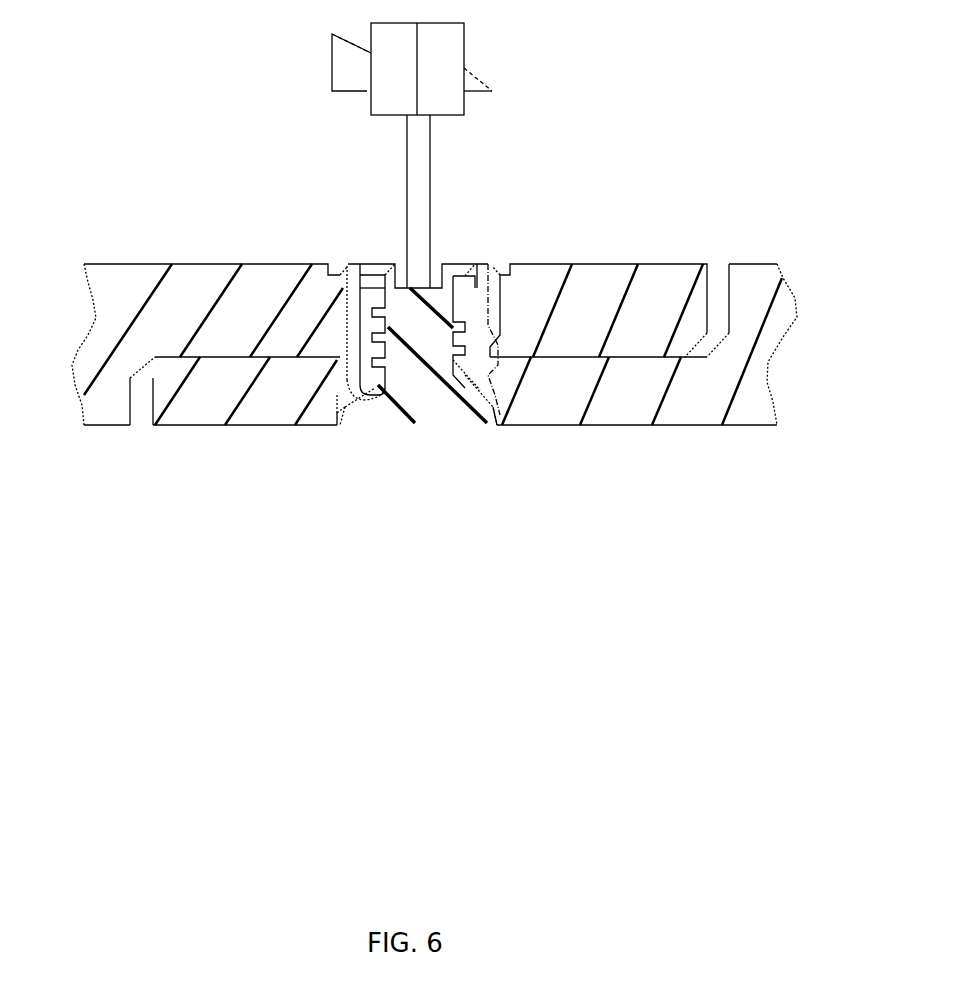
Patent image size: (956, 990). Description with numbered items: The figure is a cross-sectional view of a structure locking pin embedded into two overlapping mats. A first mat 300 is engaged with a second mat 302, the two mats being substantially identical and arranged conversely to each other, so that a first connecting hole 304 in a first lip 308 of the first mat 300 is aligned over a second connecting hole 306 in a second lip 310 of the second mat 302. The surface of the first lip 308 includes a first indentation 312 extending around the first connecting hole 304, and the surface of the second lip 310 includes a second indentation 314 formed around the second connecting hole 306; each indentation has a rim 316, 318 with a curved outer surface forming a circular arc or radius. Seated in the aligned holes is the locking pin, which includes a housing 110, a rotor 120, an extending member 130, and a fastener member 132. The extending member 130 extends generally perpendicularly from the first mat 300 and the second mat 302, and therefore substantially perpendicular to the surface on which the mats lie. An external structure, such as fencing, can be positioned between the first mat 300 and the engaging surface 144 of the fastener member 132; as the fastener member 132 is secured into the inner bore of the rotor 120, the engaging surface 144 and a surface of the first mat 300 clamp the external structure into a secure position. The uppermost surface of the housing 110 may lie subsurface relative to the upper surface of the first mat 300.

The housing 110 is at (358, 363).
The rotor 120 is at (409, 385).
The extending member 130 is at (422, 163).
The fastener member 132 is at (470, 77).
The engaging surface 144 is at (353, 90).
The first mat 300 is at (120, 265).
The second mat 302 is at (662, 425).
The first connecting hole 304 is at (500, 265).
The second connecting hole 306 is at (493, 407).
The first lip 308 is at (603, 285).
The second lip 310 is at (581, 405).
The first indentation 312 is at (327, 265).
The second indentation 314 is at (337, 425).
The rim 316 is at (328, 270).
The rim 318 is at (337, 425).